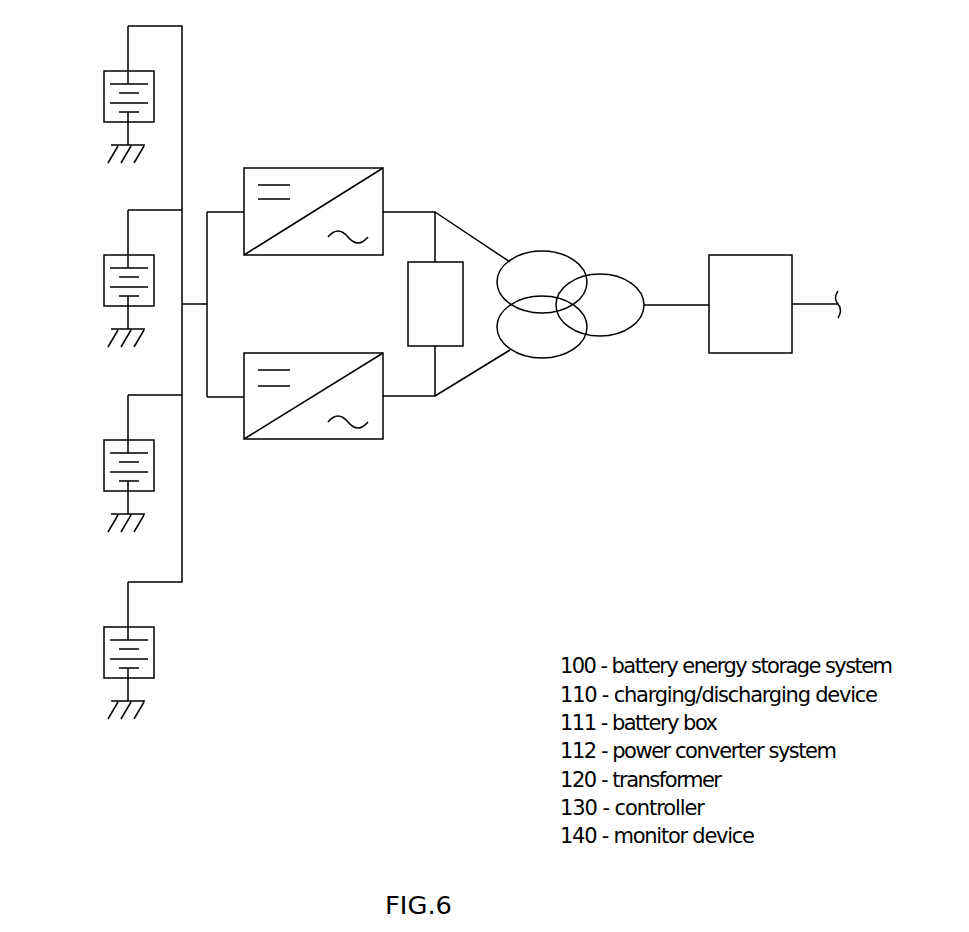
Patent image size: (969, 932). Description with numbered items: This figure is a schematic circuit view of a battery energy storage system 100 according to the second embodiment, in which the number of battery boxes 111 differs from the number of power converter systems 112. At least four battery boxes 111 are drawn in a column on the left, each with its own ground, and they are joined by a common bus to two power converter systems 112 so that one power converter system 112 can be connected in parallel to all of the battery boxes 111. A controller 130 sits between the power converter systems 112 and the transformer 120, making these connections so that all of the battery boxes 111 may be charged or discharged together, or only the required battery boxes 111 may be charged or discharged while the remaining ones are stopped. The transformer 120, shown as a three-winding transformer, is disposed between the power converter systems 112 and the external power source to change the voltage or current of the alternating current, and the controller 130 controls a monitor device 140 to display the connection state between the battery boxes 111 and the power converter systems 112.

The battery energy storage system 100 is at (593, 157).
The battery box 111 is at (103, 95).
The power converter system 112 is at (312, 168).
The transformer 120 is at (597, 336).
The controller 130 is at (452, 347).
The monitor device 140 is at (768, 255).